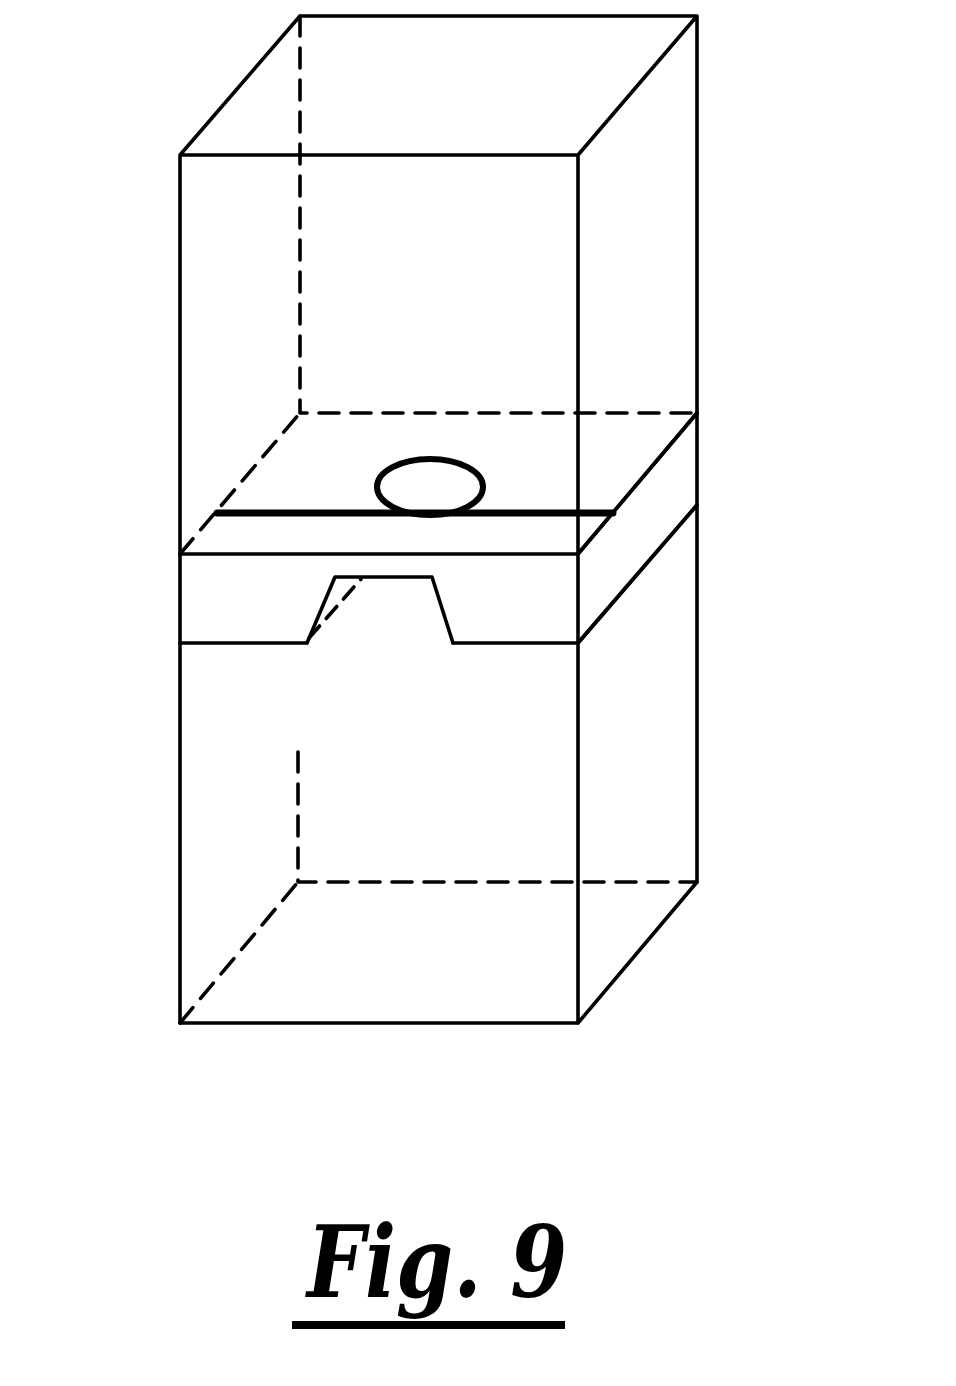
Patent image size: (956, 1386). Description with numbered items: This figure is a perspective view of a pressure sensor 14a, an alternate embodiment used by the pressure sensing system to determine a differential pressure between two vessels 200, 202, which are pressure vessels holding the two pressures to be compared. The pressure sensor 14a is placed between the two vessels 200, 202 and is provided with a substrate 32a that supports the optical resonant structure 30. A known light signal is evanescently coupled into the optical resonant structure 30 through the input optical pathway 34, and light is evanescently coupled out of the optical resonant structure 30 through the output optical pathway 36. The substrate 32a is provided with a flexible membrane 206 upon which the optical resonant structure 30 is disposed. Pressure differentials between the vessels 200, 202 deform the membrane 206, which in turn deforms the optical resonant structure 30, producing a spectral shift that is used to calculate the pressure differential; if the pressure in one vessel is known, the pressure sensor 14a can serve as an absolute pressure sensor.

The vessel 200 is at (673, 191).
The vessel 202 is at (658, 800).
The flexible membrane 206 is at (383, 562).
The output optical pathway 36 is at (285, 505).
The optical resonant structure 30 is at (427, 458).
The input optical pathway 34 is at (548, 508).
The substrate 32a is at (650, 528).
The pressure sensor 14a is at (728, 412).